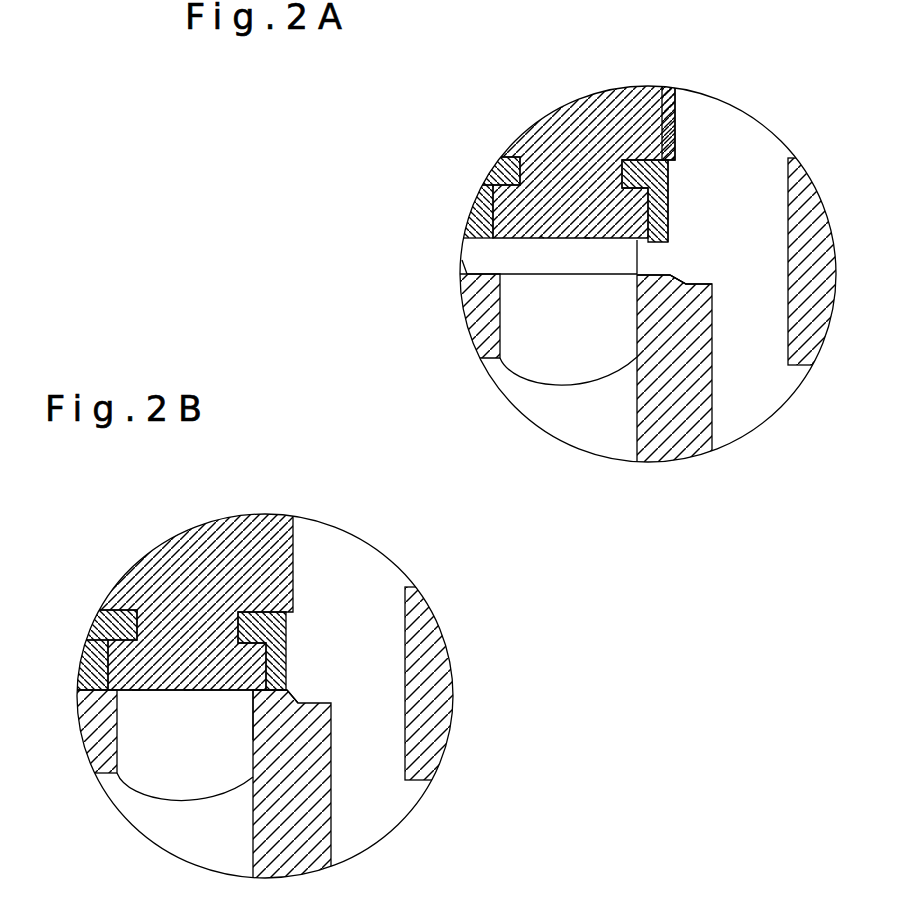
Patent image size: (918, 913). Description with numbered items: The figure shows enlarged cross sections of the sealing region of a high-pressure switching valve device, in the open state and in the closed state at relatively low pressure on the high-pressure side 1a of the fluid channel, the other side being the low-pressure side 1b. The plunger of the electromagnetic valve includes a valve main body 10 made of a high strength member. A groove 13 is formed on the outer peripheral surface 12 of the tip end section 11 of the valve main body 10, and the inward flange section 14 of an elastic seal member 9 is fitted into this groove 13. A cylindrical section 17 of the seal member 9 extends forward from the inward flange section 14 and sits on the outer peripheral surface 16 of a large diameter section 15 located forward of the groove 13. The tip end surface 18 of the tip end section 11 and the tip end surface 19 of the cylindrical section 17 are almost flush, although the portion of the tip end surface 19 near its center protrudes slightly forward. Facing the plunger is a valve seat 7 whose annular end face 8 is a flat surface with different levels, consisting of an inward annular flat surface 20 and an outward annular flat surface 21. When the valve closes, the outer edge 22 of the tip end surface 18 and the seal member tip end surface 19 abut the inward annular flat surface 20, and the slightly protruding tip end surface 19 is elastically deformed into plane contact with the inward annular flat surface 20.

In FIG. 2A, the high-pressure side 1a is at (746, 428).
In FIG. 2B, the high-pressure side 1a is at (372, 827).
In FIG. 2A, the low-pressure side 1b is at (562, 430).
In FIG. 2B, the low-pressure side 1b is at (172, 843).
In FIG. 2A, the valve seat 7 is at (717, 305).
In FIG. 2B, the valve seat 7 is at (336, 717).
In FIG. 2A, the valve seat end face 8 is at (743, 213).
In FIG. 2A, the seal member 9 is at (672, 185).
In FIG. 2B, the seal member 9 is at (291, 627).
In FIG. 2A, the valve main body 10 is at (678, 118).
In FIG. 2B, the valve main body 10 is at (296, 549).
In FIG. 2A, the tip end section 11 is at (593, 167).
In FIG. 2B, the tip end section 11 is at (294, 701).
In FIG. 2A, the outer peripheral surface 12 is at (668, 203).
In FIG. 2B, the outer peripheral surface 12 is at (88, 645).
In FIG. 2A, the groove 13 is at (505, 161).
In FIG. 2A, the inward flange section 14 is at (662, 89).
In FIG. 2A, the large diameter section 15 is at (543, 217).
In FIG. 2B, the large diameter section 15 is at (139, 665).
In FIG. 2A, the outer peripheral surface 16 is at (490, 190).
In FIG. 2A, the cylindrical section 17 is at (473, 222).
In FIG. 2B, the cylindrical section 17 is at (88, 686).
In FIG. 2A, the tip end surface 18 is at (588, 238).
In FIG. 2B, the tip end surface 18 is at (188, 692).
In FIG. 2A, the tip end surface 19 is at (464, 264).
In FIG. 2B, the tip end surface 19 is at (285, 692).
In FIG. 2A, the inward annular flat surface 20 is at (653, 273).
In FIG. 2B, the inward annular flat surface 20 is at (283, 690).
In FIG. 2A, the outward annular flat surface 21 is at (687, 283).
In FIG. 2A, the outer edge 22 is at (637, 242).
In FIG. 2B, the outer edge 22 is at (253, 722).